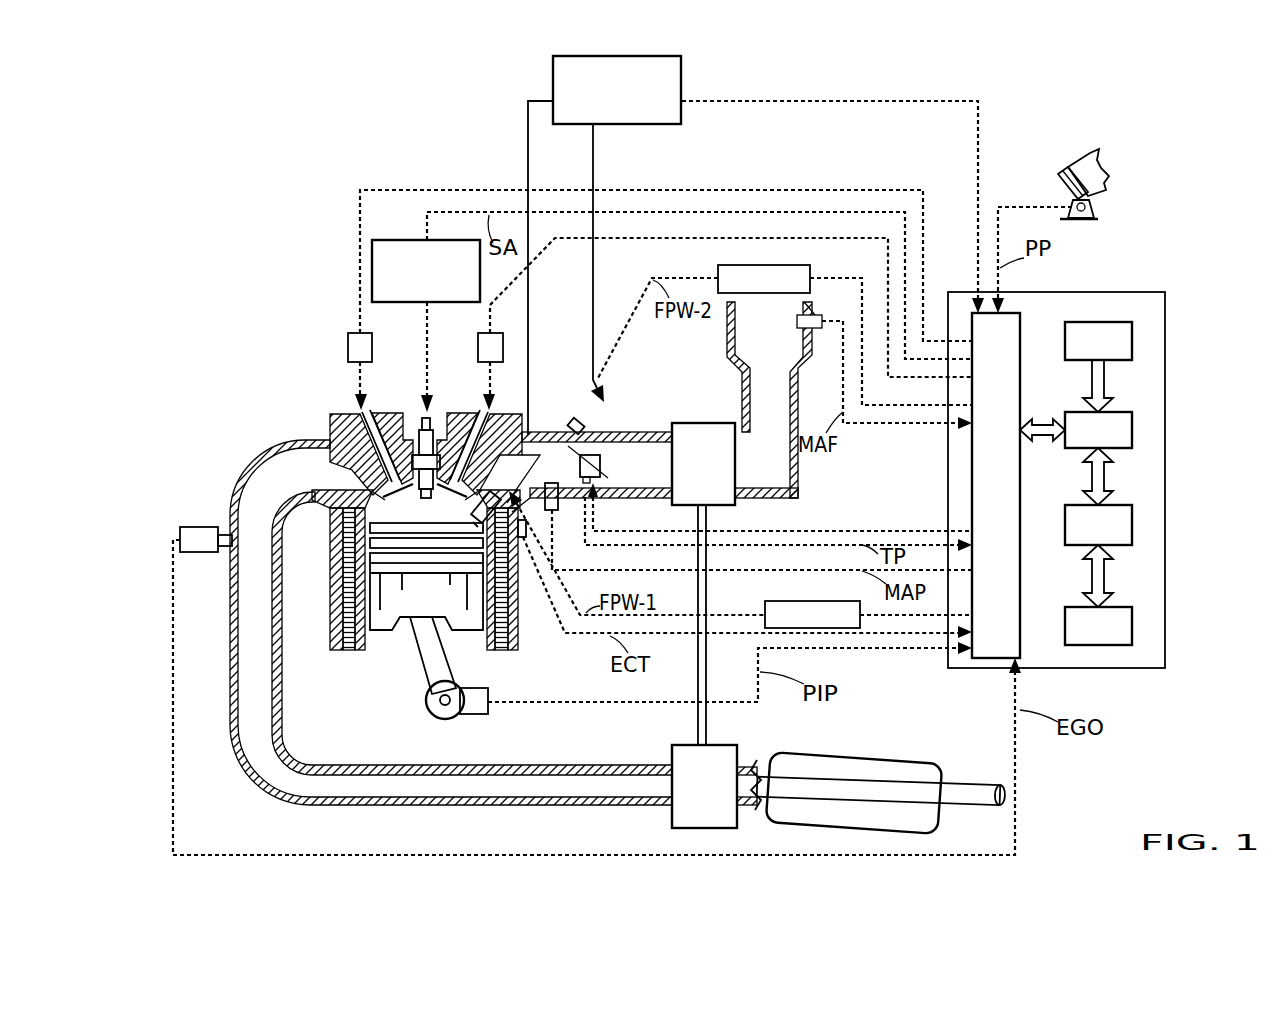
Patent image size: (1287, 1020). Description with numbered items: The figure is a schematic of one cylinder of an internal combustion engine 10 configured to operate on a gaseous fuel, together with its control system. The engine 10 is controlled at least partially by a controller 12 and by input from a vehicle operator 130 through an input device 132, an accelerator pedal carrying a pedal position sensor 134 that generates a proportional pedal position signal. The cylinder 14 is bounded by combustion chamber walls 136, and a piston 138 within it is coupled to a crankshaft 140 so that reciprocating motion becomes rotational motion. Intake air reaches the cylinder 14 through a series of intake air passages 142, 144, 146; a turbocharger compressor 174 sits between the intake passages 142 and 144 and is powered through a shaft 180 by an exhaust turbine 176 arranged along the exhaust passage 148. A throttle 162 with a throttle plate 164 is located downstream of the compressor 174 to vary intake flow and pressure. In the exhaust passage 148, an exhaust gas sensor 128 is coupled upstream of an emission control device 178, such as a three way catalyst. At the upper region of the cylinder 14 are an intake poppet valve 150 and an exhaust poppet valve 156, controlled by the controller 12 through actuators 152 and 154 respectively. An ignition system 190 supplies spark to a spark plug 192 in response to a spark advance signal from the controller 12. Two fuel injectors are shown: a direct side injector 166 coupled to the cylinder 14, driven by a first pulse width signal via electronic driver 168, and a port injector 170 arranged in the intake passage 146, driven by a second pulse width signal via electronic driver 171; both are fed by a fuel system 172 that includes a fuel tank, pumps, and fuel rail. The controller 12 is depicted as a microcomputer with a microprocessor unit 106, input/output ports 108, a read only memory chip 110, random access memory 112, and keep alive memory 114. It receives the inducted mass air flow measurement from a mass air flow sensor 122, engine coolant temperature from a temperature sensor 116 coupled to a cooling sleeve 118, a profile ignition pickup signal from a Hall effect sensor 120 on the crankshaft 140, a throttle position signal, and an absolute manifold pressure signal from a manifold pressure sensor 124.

The internal combustion engine 10 is at (262, 368).
The controller 12 is at (1165, 294).
The cylinder 14 is at (333, 535).
The microprocessor unit 106 is at (1132, 432).
The input/output ports 108 is at (1022, 322).
The read only memory chip 110 is at (1132, 340).
The random access memory 112 is at (1132, 522).
The keep alive memory 114 is at (1132, 622).
The temperature sensor 116 is at (500, 605).
The cooling sleeve 118 is at (515, 625).
The Hall effect sensor 120 is at (483, 716).
The mass air flow sensor 122 is at (818, 315).
The manifold pressure sensor 124 is at (554, 512).
The exhaust gas sensor 128 is at (180, 532).
The vehicle operator 130 is at (1110, 172).
The input device 132 is at (1063, 185).
The pedal position sensor 134 is at (1095, 207).
The combustion chamber walls 136 is at (358, 655).
The piston 138 is at (412, 633).
The crankshaft 140 is at (435, 716).
The intake air passage 142 is at (756, 346).
The intake air passage 144 is at (626, 473).
The intake air passage 146 is at (534, 473).
The exhaust passage 148 is at (286, 483).
The intake poppet valve 150 is at (436, 424).
The actuator 152 is at (478, 350).
The actuator 154 is at (348, 347).
The exhaust poppet valve 156 is at (333, 428).
The throttle 162 is at (594, 455).
The throttle plate 164 is at (565, 445).
The fuel injector 166 is at (489, 497).
The electronic driver 168 is at (765, 603).
The fuel injector 170 is at (572, 420).
The electronic driver 171 is at (718, 268).
The fuel system 172 is at (682, 64).
The compressor 174 is at (690, 423).
The exhaust turbine 176 is at (670, 820).
The emission control device 178 is at (848, 757).
The shaft 180 is at (707, 710).
The ignition system 190 is at (385, 240).
The spark plug 192 is at (421, 420).